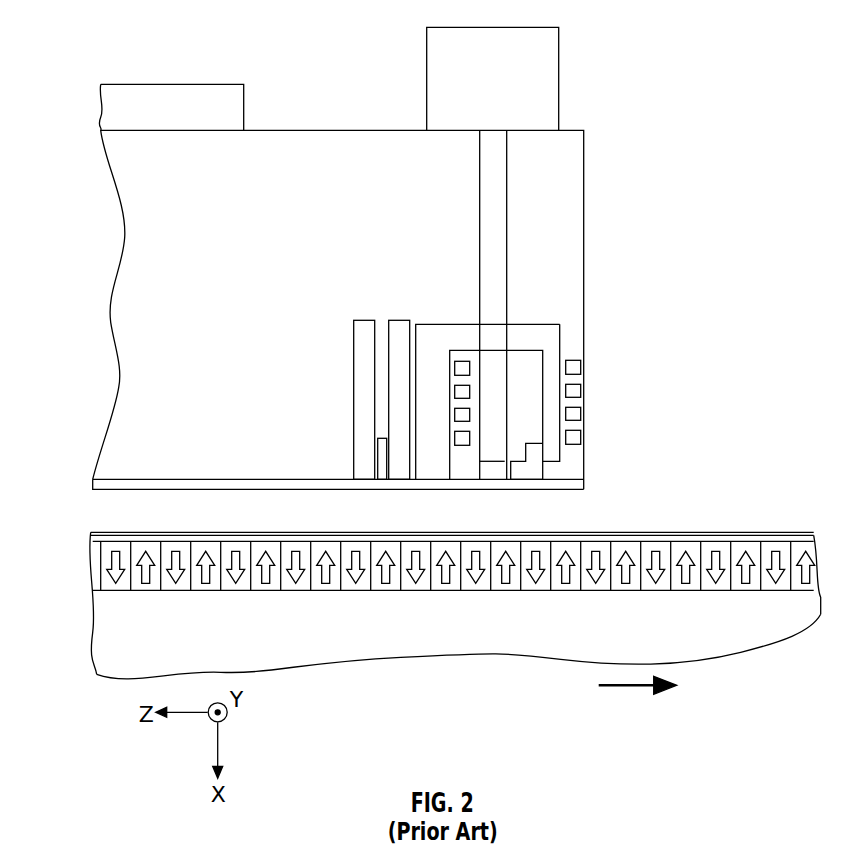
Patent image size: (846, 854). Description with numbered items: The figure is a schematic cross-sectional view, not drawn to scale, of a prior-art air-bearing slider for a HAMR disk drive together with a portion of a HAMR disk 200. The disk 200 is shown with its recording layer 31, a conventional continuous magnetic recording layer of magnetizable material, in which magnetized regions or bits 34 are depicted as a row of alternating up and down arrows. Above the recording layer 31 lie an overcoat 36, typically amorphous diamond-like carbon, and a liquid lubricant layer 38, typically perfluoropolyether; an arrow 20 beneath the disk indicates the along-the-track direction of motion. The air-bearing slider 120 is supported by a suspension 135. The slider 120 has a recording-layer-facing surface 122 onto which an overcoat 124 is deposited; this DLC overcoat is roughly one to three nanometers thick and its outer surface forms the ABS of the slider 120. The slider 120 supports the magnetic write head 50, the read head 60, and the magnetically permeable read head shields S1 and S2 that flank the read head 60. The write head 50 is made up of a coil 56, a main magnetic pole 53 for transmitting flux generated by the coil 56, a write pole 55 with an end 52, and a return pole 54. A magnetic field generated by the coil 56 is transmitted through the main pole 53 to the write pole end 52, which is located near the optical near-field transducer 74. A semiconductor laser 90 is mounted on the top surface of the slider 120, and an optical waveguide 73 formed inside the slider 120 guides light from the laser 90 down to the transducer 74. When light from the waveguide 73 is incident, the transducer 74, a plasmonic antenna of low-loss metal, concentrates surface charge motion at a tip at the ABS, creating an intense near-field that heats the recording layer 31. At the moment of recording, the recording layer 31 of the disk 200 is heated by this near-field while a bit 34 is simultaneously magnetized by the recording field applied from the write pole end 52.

The media motion direction 20 is at (628, 688).
The recording layer 31 is at (78, 539).
The magnetized regions or bits 34 is at (773, 550).
The overcoat 36 is at (723, 537).
The liquid lubricant layer 38 is at (668, 530).
The magnetic write head 50 is at (431, 268).
The write pole end 52 is at (520, 457).
The main magnetic pole 53 is at (553, 342).
The return pole 54 is at (432, 332).
The write pole 55 is at (533, 468).
The coil 56 is at (447, 348).
The read head 60 is at (378, 462).
The optical waveguide 73 is at (490, 267).
The optical near-field transducer (NFT) 74 is at (490, 458).
The semiconductor laser 90 is at (547, 77).
The air-bearing slider 120 is at (130, 377).
The recording-layer-facing surface 122 is at (190, 477).
The overcoat 124 is at (218, 488).
The suspension 135 is at (233, 88).
The disk 200 is at (717, 650).
The read head shield S1 is at (363, 398).
The read head shield S2 is at (400, 317).
The air-bearing surface ABS is at (567, 488).